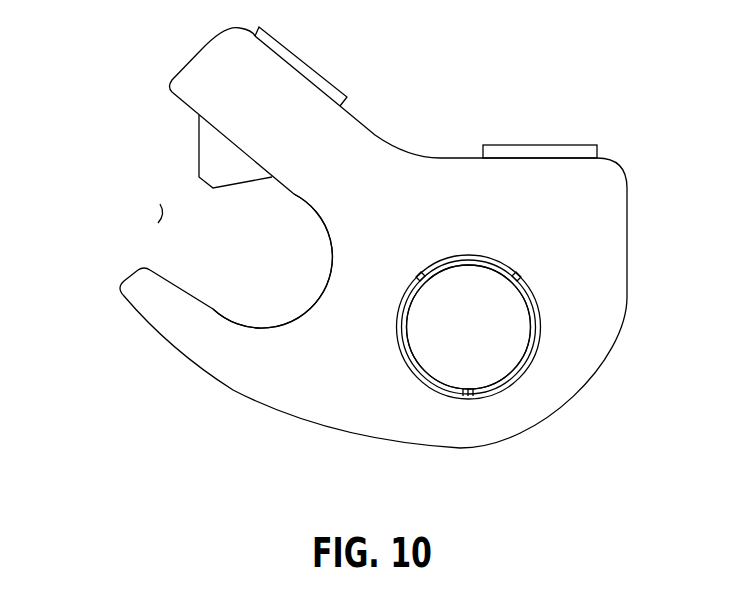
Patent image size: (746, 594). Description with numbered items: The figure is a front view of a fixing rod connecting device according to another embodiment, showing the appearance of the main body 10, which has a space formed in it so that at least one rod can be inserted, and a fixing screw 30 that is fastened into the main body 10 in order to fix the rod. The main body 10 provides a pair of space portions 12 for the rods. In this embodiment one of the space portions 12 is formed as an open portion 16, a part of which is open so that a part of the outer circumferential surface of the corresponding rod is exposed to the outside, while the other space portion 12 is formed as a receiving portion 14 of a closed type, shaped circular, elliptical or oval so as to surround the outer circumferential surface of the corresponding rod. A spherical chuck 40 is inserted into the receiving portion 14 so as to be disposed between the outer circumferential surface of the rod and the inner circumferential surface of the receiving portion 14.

The main body 10 is at (607, 242).
The space portion 12 is at (263, 259).
The receiving portion 14 is at (530, 368).
The open portion 16 is at (160, 212).
The fixing screw 30 is at (540, 148).
The spherical chuck 40 is at (535, 353).